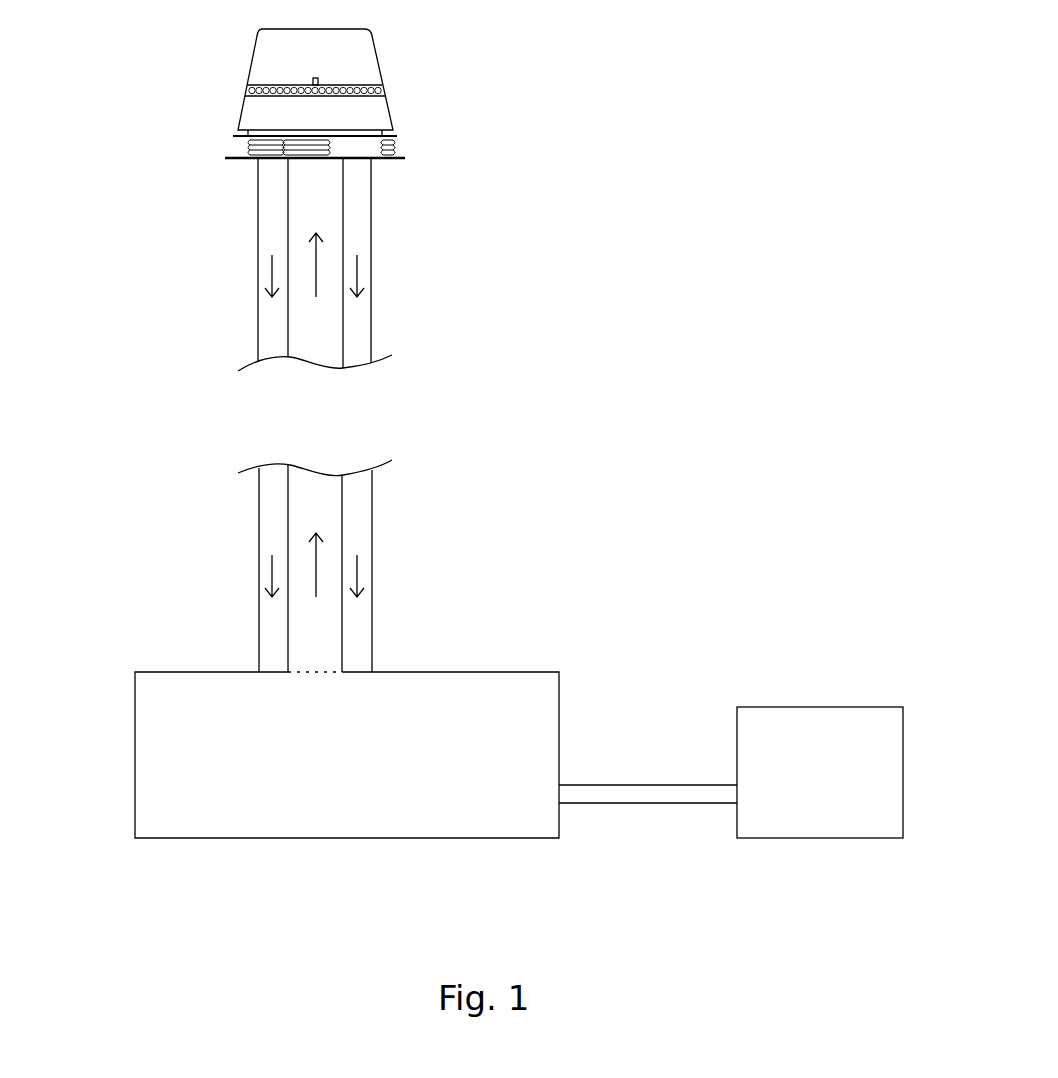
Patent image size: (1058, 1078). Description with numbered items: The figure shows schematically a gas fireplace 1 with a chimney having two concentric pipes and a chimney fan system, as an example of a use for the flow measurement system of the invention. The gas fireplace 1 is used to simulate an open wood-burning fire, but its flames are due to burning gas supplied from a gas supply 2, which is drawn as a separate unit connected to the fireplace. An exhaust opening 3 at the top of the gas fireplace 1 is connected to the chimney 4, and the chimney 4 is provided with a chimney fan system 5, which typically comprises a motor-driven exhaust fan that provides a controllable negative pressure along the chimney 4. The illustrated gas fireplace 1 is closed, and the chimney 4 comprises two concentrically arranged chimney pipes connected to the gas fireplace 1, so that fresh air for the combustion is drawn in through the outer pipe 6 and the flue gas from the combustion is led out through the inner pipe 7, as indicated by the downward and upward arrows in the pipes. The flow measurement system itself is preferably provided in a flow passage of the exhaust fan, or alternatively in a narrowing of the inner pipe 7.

The gas fireplace 1 is at (118, 747).
The gas supply 2 is at (915, 725).
The exhaust opening 3 is at (330, 661).
The chimney 4 is at (400, 557).
The chimney fan system 5 is at (414, 63).
The outer pipe 6 is at (388, 222).
The inner pipe 7 is at (336, 335).